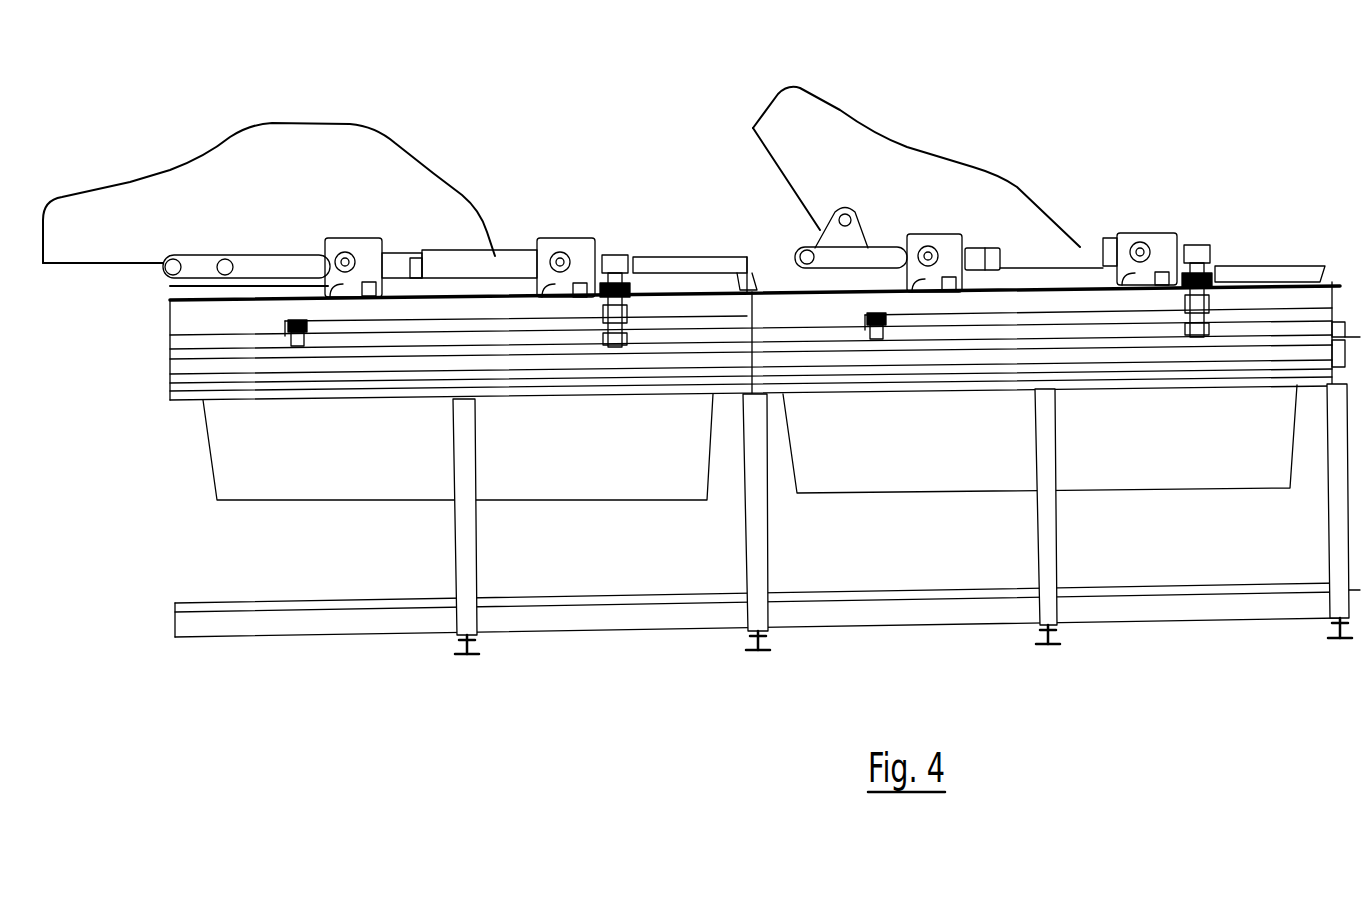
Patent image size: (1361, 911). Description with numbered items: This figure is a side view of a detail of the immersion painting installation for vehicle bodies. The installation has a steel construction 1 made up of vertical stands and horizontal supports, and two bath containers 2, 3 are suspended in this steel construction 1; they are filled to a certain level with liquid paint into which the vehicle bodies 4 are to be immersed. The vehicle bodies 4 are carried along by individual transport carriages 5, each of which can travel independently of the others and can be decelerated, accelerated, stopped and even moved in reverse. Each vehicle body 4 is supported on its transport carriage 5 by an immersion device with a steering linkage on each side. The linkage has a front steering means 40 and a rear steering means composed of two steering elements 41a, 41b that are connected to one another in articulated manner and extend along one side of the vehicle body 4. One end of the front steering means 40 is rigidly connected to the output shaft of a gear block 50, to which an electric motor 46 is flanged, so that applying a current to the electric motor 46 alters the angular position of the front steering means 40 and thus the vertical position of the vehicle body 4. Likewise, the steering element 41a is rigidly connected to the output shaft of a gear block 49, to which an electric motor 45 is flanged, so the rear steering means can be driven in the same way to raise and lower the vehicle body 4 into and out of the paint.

The steel construction 1 is at (765, 506).
The bath container 2 is at (374, 462).
The bath container 3 is at (921, 457).
The vehicle body 4 is at (334, 198).
The transport carriage 5 is at (482, 284).
The front steering means 40 is at (508, 260).
The steering element 41a is at (302, 262).
The steering element 41b is at (197, 270).
The electric motor 45 is at (400, 262).
The electric motor 46 is at (620, 262).
The gear block 49 is at (354, 248).
The gear block 50 is at (582, 245).